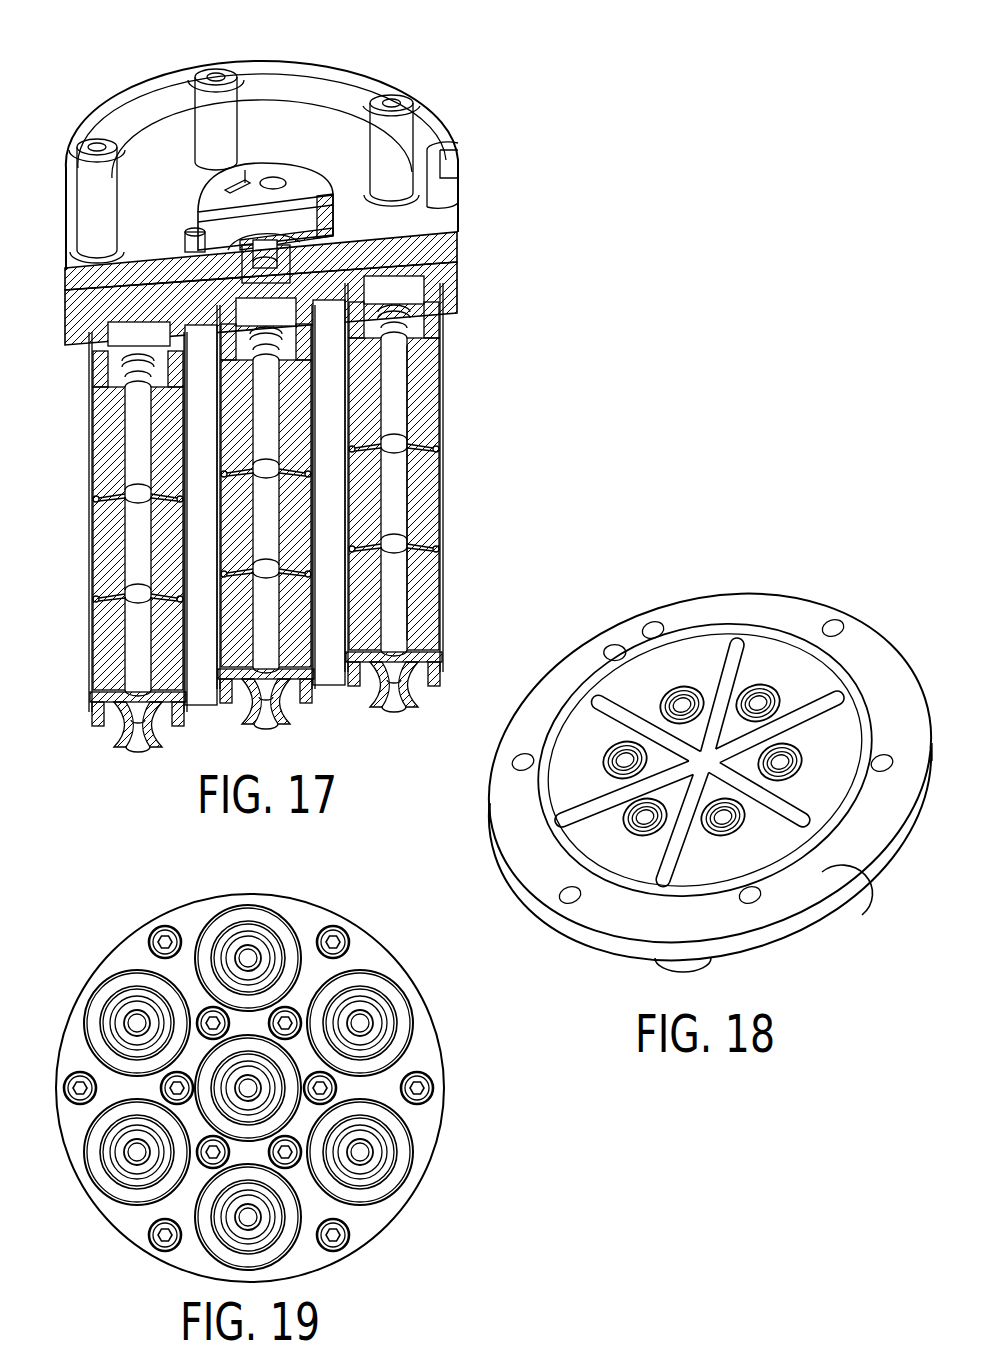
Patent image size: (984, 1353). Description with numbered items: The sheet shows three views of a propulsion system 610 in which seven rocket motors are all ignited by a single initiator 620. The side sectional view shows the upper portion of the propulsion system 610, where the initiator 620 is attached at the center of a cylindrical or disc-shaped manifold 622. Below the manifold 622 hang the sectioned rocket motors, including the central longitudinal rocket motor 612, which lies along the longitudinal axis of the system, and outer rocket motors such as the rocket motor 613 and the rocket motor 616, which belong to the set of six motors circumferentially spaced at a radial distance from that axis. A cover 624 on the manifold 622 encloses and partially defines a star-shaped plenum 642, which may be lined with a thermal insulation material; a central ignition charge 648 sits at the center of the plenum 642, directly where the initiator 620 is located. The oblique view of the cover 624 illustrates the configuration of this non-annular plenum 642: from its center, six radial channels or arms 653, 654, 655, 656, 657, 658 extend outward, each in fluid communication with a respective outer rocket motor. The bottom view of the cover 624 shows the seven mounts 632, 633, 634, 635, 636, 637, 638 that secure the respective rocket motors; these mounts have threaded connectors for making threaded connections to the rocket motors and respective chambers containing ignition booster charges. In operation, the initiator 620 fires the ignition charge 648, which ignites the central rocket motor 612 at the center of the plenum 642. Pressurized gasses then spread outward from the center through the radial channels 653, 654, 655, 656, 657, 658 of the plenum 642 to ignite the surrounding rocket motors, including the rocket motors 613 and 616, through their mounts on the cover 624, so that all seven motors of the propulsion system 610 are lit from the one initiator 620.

In FIG. 17, the propulsion system 610 is at (156, 62).
In FIG. 17, the central longitudinal rocket motor 612 is at (235, 657).
In FIG. 17, the rocket motor 613 is at (93, 560).
In FIG. 17, the rocket motor 616 is at (422, 458).
In FIG. 17, the initiator 620 is at (300, 183).
In FIG. 17, the manifold 622 is at (438, 220).
In FIG. 18, the cover 624 is at (780, 608).
In FIG. 19, the cover 624 is at (190, 930).
In FIG. 17, the mount 632 is at (420, 390).
In FIG. 19, the mount 632 is at (280, 1068).
In FIG. 17, the mount 633 is at (93, 357).
In FIG. 19, the mount 633 is at (118, 1185).
In FIG. 19, the mount 634 is at (108, 1000).
In FIG. 19, the mount 635 is at (257, 922).
In FIG. 17, the mount 636 is at (425, 305).
In FIG. 19, the mount 636 is at (400, 1030).
In FIG. 19, the mount 637 is at (387, 1155).
In FIG. 19, the mount 638 is at (280, 1240).
In FIG. 17, the star-shaped plenum 642 is at (178, 270).
In FIG. 18, the star-shaped plenum 642 is at (757, 675).
In FIG. 17, the central ignition charge 648 is at (400, 278).
In FIG. 18, the radial channel 653 is at (782, 810).
In FIG. 18, the radial channel 654 is at (818, 713).
In FIG. 18, the radial channel 655 is at (728, 663).
In FIG. 18, the radial channel 656 is at (618, 713).
In FIG. 18, the radial channel 657 is at (567, 810).
In FIG. 18, the radial channel 658 is at (673, 860).